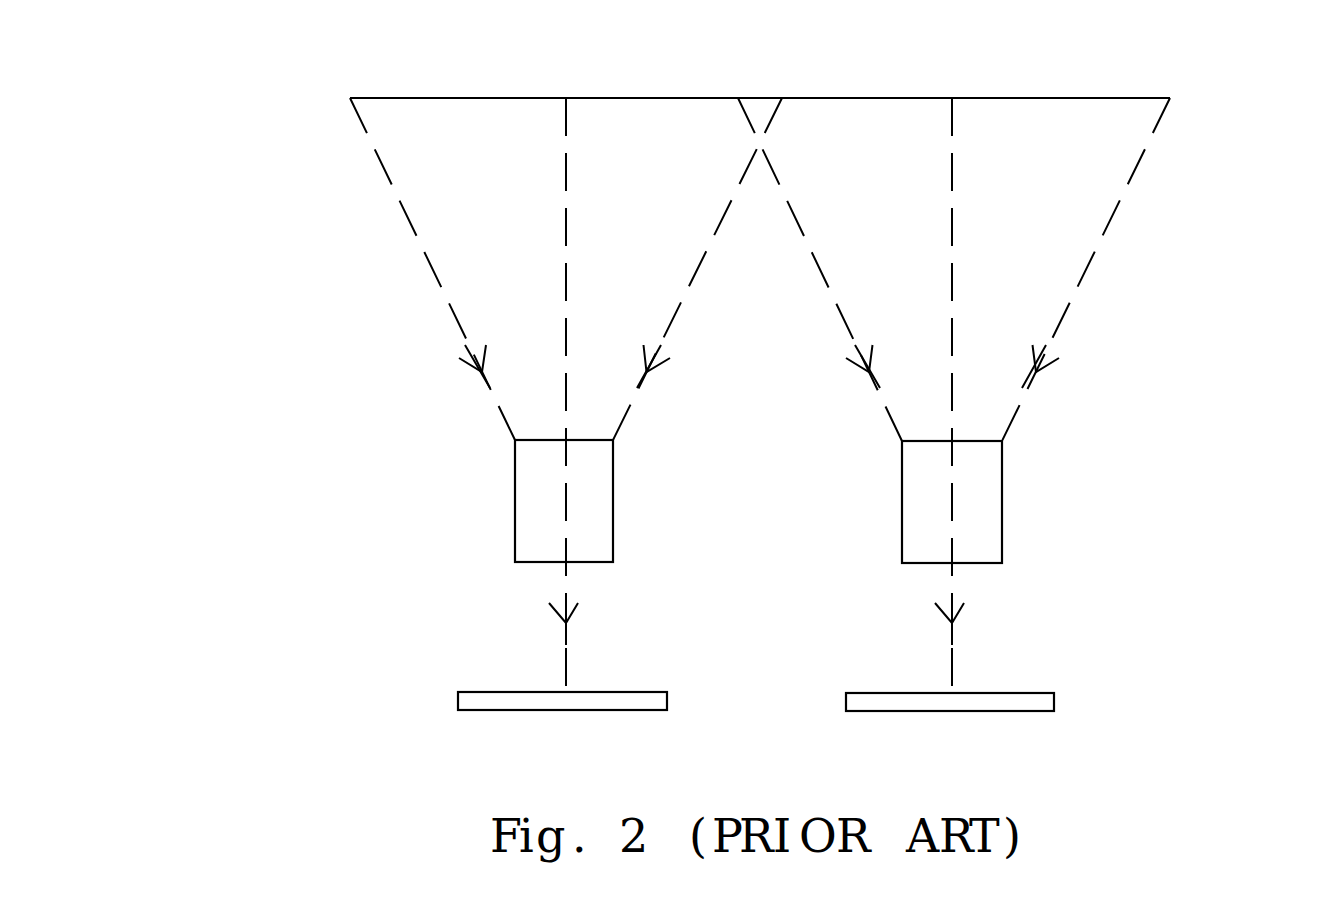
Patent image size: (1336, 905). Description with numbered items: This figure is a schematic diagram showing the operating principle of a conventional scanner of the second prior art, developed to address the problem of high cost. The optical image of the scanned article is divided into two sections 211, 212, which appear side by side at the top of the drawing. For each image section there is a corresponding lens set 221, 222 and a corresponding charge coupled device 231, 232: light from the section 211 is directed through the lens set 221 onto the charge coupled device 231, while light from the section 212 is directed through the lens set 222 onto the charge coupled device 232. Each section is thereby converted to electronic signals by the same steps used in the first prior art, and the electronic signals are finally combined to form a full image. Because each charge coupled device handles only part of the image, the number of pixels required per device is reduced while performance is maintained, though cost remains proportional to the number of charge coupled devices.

The optical image section 211 is at (440, 98).
The optical image section 212 is at (1077, 98).
The lens set 221 is at (530, 502).
The lens set 222 is at (985, 503).
The charge coupled device 231 is at (490, 700).
The charge coupled device 232 is at (1020, 702).